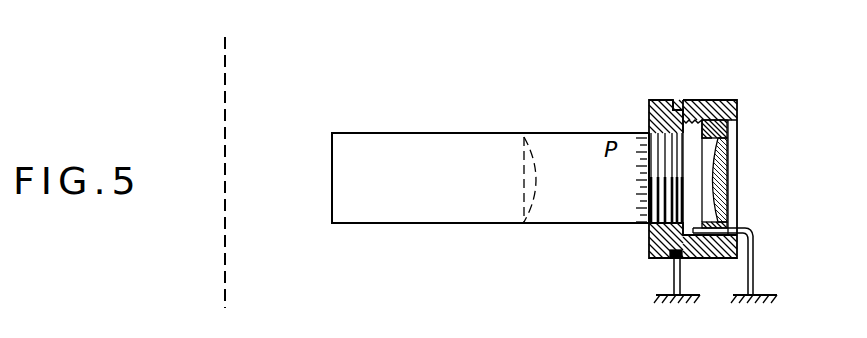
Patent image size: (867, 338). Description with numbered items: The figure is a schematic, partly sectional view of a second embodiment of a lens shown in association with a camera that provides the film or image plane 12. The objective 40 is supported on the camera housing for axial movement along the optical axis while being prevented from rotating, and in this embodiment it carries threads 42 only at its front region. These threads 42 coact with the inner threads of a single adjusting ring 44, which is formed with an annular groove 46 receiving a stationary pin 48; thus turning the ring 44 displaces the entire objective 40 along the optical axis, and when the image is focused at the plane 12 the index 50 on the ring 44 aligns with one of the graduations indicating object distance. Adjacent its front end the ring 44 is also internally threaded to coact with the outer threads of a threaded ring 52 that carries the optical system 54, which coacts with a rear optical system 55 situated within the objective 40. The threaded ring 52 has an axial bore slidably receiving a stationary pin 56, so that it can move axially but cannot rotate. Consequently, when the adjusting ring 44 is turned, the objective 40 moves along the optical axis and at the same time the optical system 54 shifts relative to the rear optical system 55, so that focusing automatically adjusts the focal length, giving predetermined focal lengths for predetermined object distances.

The film or image plane 12 is at (229, 73).
The objective 40 is at (405, 133).
The threads 42 is at (652, 218).
The adjusting ring 44 is at (719, 100).
The annular groove 46 is at (679, 100).
The stationary pin 48 is at (673, 273).
The index 50 is at (655, 100).
The threaded ring 52 is at (732, 132).
The optical system 54 is at (723, 178).
The rear optical system 55 is at (526, 223).
The stationary pin 56 is at (757, 231).